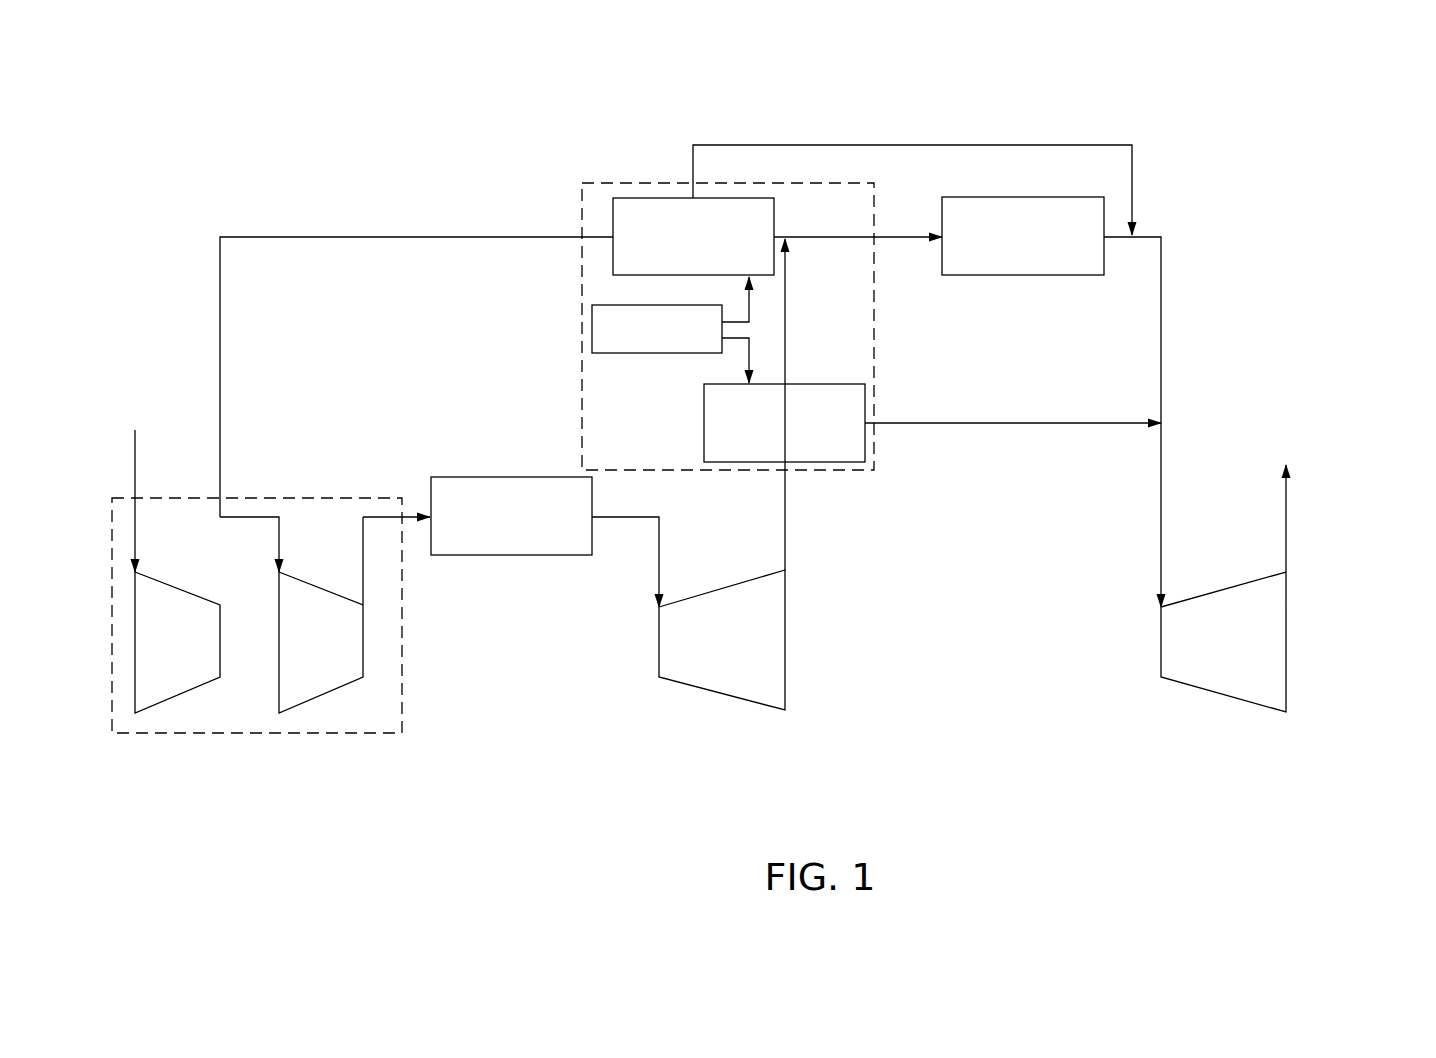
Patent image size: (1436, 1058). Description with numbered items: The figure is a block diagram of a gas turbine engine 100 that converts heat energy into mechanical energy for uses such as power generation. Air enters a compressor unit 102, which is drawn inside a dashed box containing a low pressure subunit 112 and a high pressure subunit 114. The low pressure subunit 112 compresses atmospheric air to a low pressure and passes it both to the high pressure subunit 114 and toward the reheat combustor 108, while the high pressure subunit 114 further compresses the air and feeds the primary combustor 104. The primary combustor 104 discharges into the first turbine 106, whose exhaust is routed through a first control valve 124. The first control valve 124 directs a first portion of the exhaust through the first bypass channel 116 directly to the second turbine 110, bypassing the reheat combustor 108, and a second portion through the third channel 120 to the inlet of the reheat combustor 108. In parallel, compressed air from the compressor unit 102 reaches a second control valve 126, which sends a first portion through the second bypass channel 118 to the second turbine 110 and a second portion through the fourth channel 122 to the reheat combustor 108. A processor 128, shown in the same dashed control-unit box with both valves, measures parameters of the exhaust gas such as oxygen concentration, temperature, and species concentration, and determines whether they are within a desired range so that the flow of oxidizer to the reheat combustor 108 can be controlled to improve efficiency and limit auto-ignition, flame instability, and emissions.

The gas turbine engine 100 is at (1317, 118).
The compressor unit 102 is at (257, 733).
The primary combustor 104 is at (512, 555).
The first turbine 106 is at (722, 695).
The reheat combustor 108 is at (1023, 275).
The second turbine 110 is at (1223, 697).
The low pressure subunit 112 is at (168, 582).
The high pressure subunit 114 is at (308, 582).
The first bypass channel 116 is at (1038, 423).
The second bypass channel 118 is at (913, 142).
The third channel 120 is at (785, 303).
The fourth channel 122 is at (800, 237).
The first control valve 124 is at (846, 462).
The second control valve 126 is at (630, 197).
The processor 128 is at (592, 328).